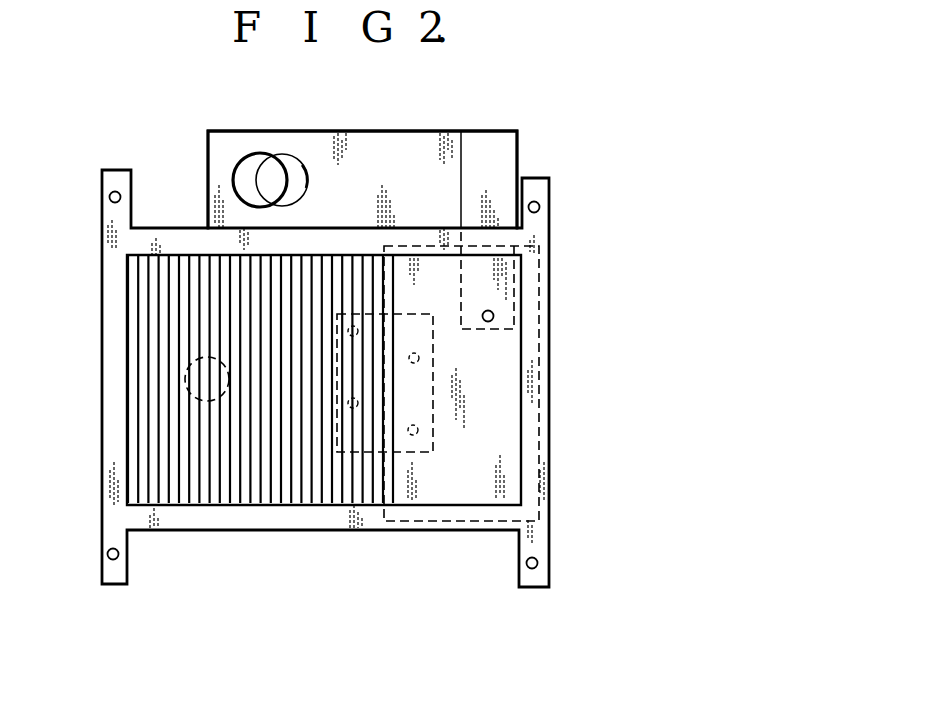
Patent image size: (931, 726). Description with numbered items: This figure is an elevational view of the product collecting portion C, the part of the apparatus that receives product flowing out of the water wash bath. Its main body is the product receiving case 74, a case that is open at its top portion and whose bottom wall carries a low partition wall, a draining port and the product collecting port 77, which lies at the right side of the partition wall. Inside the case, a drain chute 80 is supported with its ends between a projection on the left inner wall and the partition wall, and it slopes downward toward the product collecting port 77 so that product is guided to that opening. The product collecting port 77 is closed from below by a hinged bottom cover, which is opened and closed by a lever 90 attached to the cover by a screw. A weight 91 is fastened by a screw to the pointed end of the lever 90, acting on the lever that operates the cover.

The product collecting portion C is at (574, 154).
The product receiving case 74 is at (545, 455).
The product collecting port 77 is at (450, 506).
The drain chute 80 is at (270, 478).
The lever 90 is at (377, 142).
The weight 91 is at (285, 168).